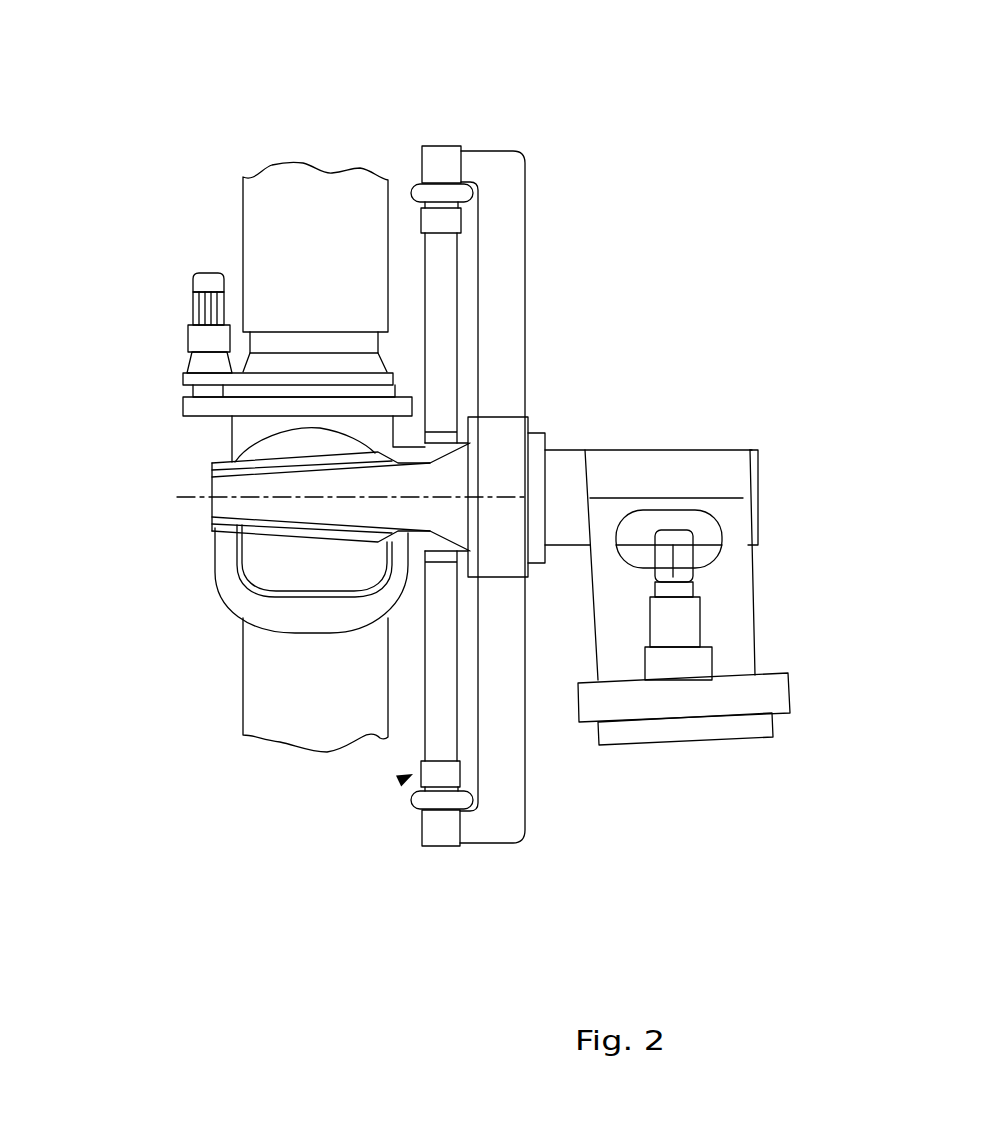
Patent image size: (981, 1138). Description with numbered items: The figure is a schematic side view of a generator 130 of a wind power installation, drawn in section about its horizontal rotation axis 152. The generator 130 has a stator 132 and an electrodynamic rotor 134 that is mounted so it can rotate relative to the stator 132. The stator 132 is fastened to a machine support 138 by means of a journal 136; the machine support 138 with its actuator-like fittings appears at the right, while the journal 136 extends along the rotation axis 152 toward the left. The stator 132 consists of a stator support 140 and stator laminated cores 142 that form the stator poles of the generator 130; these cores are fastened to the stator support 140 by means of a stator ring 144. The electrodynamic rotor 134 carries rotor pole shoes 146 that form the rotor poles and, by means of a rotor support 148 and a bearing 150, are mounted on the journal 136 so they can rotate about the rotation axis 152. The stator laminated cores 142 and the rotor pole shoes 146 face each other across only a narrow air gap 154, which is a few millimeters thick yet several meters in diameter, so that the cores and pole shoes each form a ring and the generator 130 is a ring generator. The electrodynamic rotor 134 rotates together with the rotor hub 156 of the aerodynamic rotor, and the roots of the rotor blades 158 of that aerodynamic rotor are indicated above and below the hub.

The generator 130 is at (595, 117).
The stator 132 is at (548, 213).
The electrodynamic rotor 134 is at (395, 250).
The journal 136 is at (303, 498).
The machine support 138 is at (665, 468).
The stator support 140 is at (512, 342).
The stator laminated cores 142 is at (430, 190).
The stator ring 144 is at (440, 165).
The rotor pole shoes 146 is at (452, 777).
The rotor support 148 is at (448, 290).
The bearing 150 is at (223, 467).
The rotation axis 152 is at (193, 498).
The air gap 154 is at (400, 780).
The rotor hub 156 is at (280, 600).
The rotor blades 158 is at (267, 247).